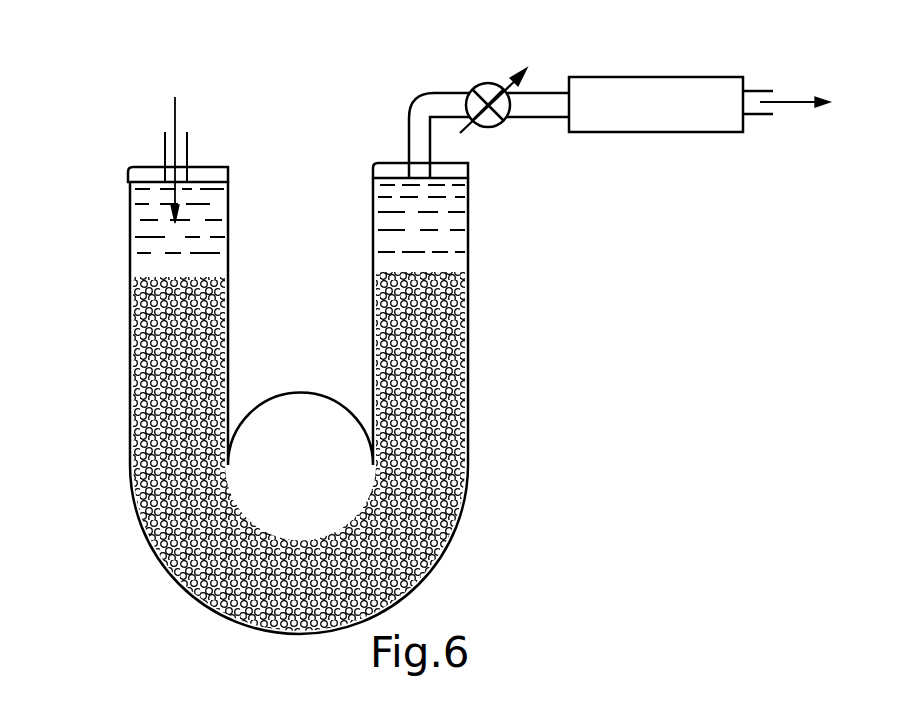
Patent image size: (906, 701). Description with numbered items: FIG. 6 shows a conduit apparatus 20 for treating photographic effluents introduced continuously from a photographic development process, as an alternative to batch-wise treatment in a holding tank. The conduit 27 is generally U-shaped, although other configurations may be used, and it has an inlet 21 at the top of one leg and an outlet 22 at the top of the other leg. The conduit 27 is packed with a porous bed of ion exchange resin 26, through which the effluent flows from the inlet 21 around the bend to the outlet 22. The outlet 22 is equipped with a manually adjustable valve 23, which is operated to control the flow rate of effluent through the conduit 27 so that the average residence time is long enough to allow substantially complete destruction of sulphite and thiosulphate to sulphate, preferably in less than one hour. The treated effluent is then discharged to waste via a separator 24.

The conduit apparatus 20 is at (116, 360).
The inlet 21 is at (187, 142).
The outlet 22 is at (409, 128).
The manually adjustable valve 23 is at (490, 128).
The separator 24 is at (600, 85).
The porous bed of ion exchange resin 26 is at (165, 470).
The conduit 27 is at (130, 275).